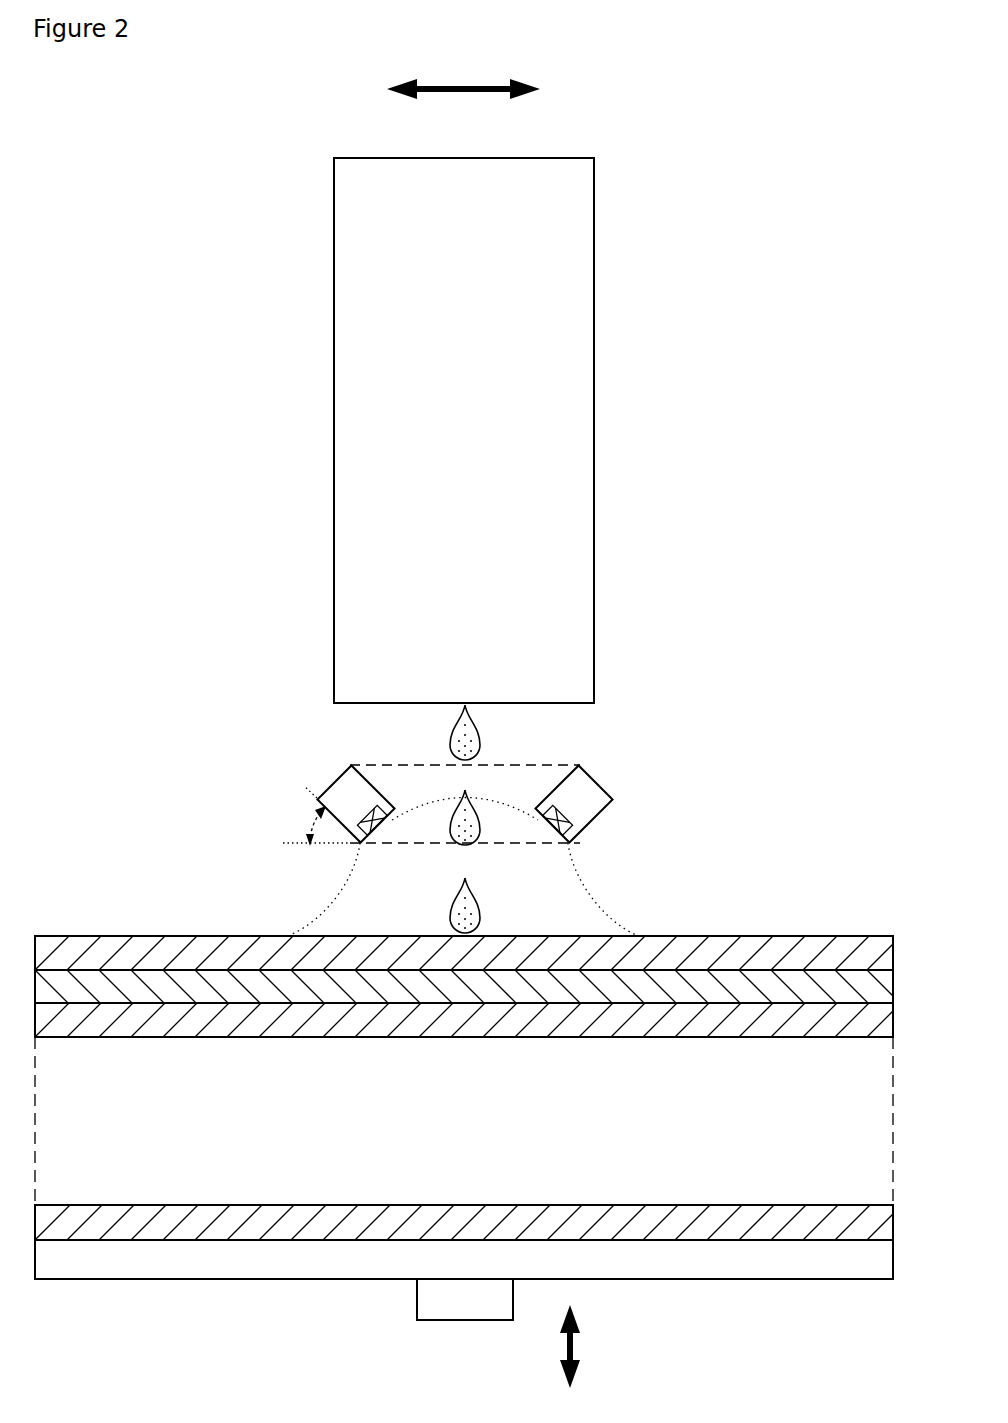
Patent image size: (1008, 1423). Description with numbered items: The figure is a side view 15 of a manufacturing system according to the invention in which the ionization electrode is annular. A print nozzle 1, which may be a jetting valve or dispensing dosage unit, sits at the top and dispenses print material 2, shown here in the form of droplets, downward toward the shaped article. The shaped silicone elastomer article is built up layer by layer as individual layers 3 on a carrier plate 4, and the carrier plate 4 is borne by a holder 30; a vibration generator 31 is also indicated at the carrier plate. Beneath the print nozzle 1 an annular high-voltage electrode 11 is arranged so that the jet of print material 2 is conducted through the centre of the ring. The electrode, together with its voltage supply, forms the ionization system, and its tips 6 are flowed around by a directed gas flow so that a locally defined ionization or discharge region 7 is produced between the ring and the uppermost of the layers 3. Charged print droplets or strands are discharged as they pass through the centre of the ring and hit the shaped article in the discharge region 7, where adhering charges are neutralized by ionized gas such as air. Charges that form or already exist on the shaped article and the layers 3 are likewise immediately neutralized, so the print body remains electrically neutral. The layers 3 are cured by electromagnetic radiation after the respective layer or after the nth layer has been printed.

The print nozzle 1 is at (415, 430).
The print material 2 is at (462, 742).
The layers of the shaped article 3 is at (468, 966).
The carrier plate 4 is at (468, 1196).
The tips of the high-voltage electrode 6 is at (557, 818).
The ionization region (discharge region) 7 is at (555, 893).
The annular high-voltage electrode 11 is at (592, 798).
The side view of manufacturing system with ring electrode 15 is at (748, 477).
The holder of the carrier plate 30 is at (401, 1334).
The vibration generator 31 is at (465, 1299).